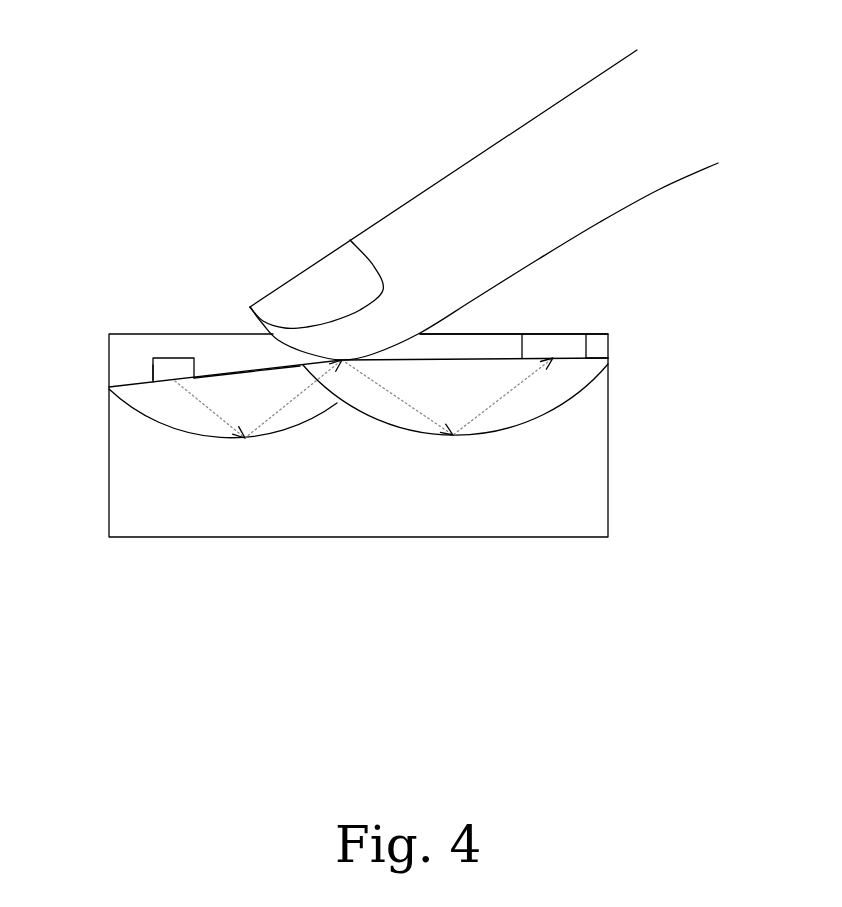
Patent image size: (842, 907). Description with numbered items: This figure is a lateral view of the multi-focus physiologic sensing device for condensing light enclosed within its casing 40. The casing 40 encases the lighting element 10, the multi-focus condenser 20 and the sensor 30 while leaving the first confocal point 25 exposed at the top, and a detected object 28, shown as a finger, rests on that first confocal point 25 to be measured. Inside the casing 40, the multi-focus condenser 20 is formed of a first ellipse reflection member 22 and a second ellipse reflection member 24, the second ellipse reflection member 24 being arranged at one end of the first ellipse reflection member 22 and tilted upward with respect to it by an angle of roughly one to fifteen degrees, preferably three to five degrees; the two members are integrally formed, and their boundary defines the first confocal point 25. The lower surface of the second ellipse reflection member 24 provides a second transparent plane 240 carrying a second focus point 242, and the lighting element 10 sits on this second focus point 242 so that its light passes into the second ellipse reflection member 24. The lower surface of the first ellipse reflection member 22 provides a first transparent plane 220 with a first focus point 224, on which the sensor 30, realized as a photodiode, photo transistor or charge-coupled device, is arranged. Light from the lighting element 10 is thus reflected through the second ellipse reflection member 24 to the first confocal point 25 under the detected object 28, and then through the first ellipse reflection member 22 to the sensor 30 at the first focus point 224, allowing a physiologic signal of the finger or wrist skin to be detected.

The lighting element 10 is at (180, 367).
The multi-focus condenser 20 is at (414, 469).
The first ellipse reflection member 22 is at (585, 412).
The second ellipse reflection member 24 is at (151, 439).
The first confocal point 25 is at (342, 362).
The detected object 28 is at (440, 210).
The sensor 30 is at (558, 343).
The casing 40 is at (463, 537).
The first transparent plane 220 is at (488, 357).
The first focus point 224 is at (605, 358).
The second transparent plane 240 is at (237, 370).
The second focus point 242 is at (173, 377).